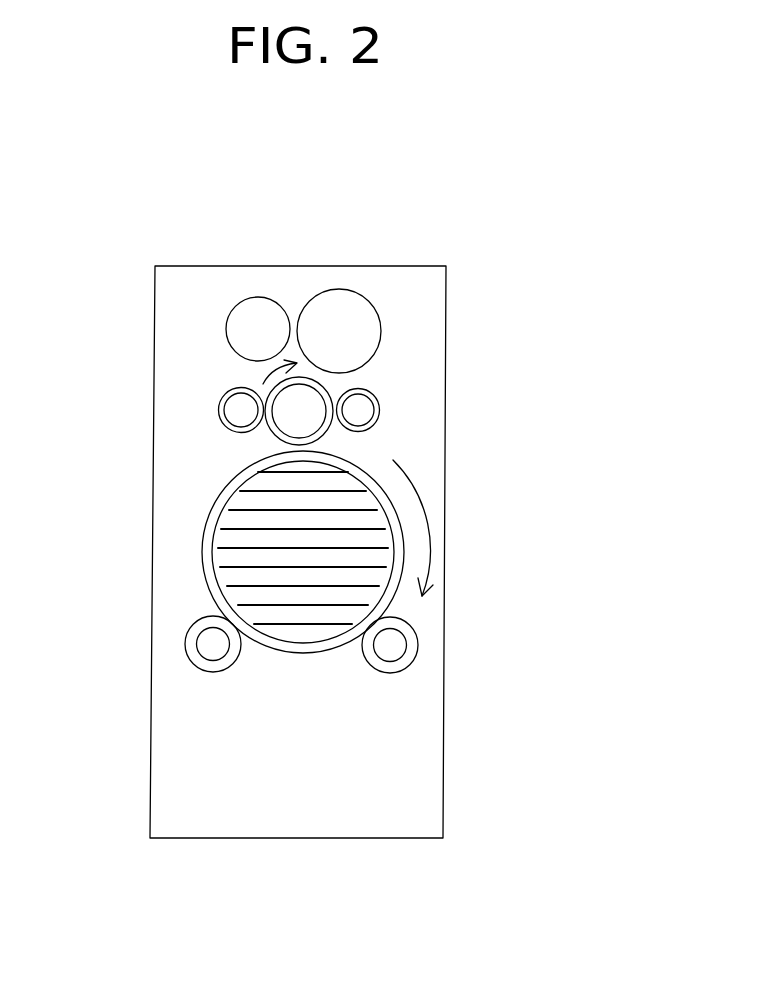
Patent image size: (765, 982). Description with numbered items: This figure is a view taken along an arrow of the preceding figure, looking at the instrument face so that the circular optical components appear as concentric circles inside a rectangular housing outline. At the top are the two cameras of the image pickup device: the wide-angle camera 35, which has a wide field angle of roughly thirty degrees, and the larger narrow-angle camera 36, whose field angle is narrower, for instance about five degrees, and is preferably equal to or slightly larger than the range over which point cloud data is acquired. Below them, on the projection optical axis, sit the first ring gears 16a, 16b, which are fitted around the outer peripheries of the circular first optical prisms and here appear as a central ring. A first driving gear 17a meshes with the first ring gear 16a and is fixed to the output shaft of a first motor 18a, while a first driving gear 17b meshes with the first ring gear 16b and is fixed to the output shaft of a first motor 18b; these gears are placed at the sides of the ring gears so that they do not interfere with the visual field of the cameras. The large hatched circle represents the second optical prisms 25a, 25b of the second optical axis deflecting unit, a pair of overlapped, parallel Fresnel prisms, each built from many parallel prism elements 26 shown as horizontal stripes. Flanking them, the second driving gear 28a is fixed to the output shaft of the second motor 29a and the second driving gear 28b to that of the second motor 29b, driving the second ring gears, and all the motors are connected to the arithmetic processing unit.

The wide-angle camera 35 is at (246, 297).
The narrow-angle camera 36 is at (348, 290).
The first ring gear 16a is at (397, 329).
The first ring gear 16b is at (314, 378).
The first driving gear 17a is at (377, 392).
The first driving gear 17b is at (225, 394).
The first motor 18a is at (377, 427).
The first motor 18b is at (224, 420).
The second optical prism 25a is at (415, 552).
The second optical prism 25b is at (390, 497).
The prism element 26 is at (305, 618).
The second driving gear 28a is at (418, 658).
The second driving gear 28b is at (185, 645).
The second motor 29a is at (403, 642).
The second motor 29b is at (200, 634).